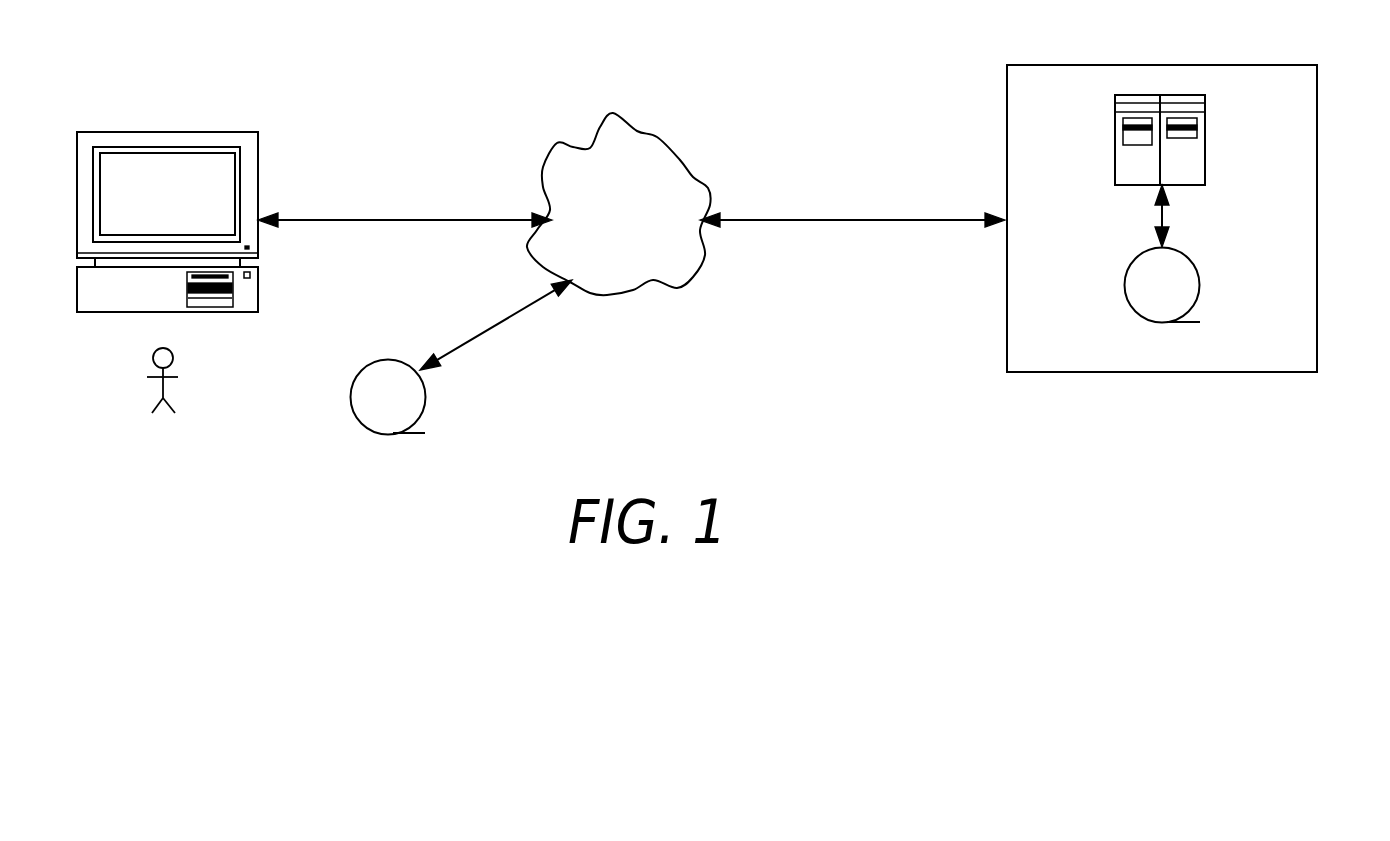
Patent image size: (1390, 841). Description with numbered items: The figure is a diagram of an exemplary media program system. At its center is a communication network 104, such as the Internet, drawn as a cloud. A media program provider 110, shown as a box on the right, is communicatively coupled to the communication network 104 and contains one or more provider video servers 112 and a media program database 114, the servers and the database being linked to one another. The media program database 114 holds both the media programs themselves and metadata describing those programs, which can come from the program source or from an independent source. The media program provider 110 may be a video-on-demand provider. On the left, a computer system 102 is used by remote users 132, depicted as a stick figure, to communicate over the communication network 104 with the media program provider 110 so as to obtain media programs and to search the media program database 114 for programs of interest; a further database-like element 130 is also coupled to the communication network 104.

The computer system 102 is at (212, 90).
The communication network 104 is at (710, 187).
The media program provider 110 is at (1317, 283).
The provider video server 112 is at (1207, 115).
The media program database 114 is at (1203, 293).
The storage/database 130 is at (370, 428).
The remote user 132 is at (165, 422).